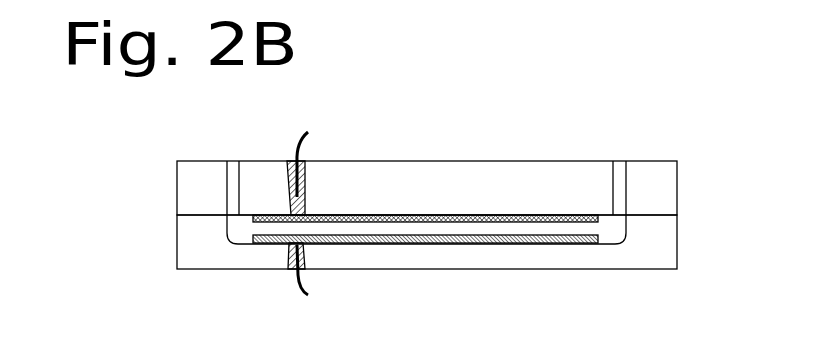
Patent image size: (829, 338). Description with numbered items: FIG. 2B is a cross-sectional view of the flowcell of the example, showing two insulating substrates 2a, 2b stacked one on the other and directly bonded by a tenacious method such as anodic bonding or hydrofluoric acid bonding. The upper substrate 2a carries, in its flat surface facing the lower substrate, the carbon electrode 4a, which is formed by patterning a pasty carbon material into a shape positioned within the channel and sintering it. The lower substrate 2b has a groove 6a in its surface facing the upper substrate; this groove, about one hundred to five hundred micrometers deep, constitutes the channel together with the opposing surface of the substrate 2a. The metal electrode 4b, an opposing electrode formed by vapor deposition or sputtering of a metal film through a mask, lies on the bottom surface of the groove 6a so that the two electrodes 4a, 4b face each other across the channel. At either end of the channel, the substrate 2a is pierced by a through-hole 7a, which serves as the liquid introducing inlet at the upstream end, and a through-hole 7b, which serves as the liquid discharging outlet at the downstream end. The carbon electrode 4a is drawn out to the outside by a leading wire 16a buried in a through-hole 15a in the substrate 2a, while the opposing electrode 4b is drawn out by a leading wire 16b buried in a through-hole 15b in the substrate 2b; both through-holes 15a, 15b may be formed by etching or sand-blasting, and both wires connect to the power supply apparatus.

The substrate 2a is at (662, 186).
The substrate 2b is at (663, 248).
The through-hole 7a is at (232, 172).
The through-hole 7b is at (620, 170).
The carbon electrode 4a is at (472, 215).
The metal electrode 4b is at (475, 245).
The groove 6a is at (552, 230).
The through-hole 15a is at (308, 178).
The through-hole 15b is at (308, 262).
The leading wire 16a is at (295, 148).
The leading wire 16b is at (295, 282).